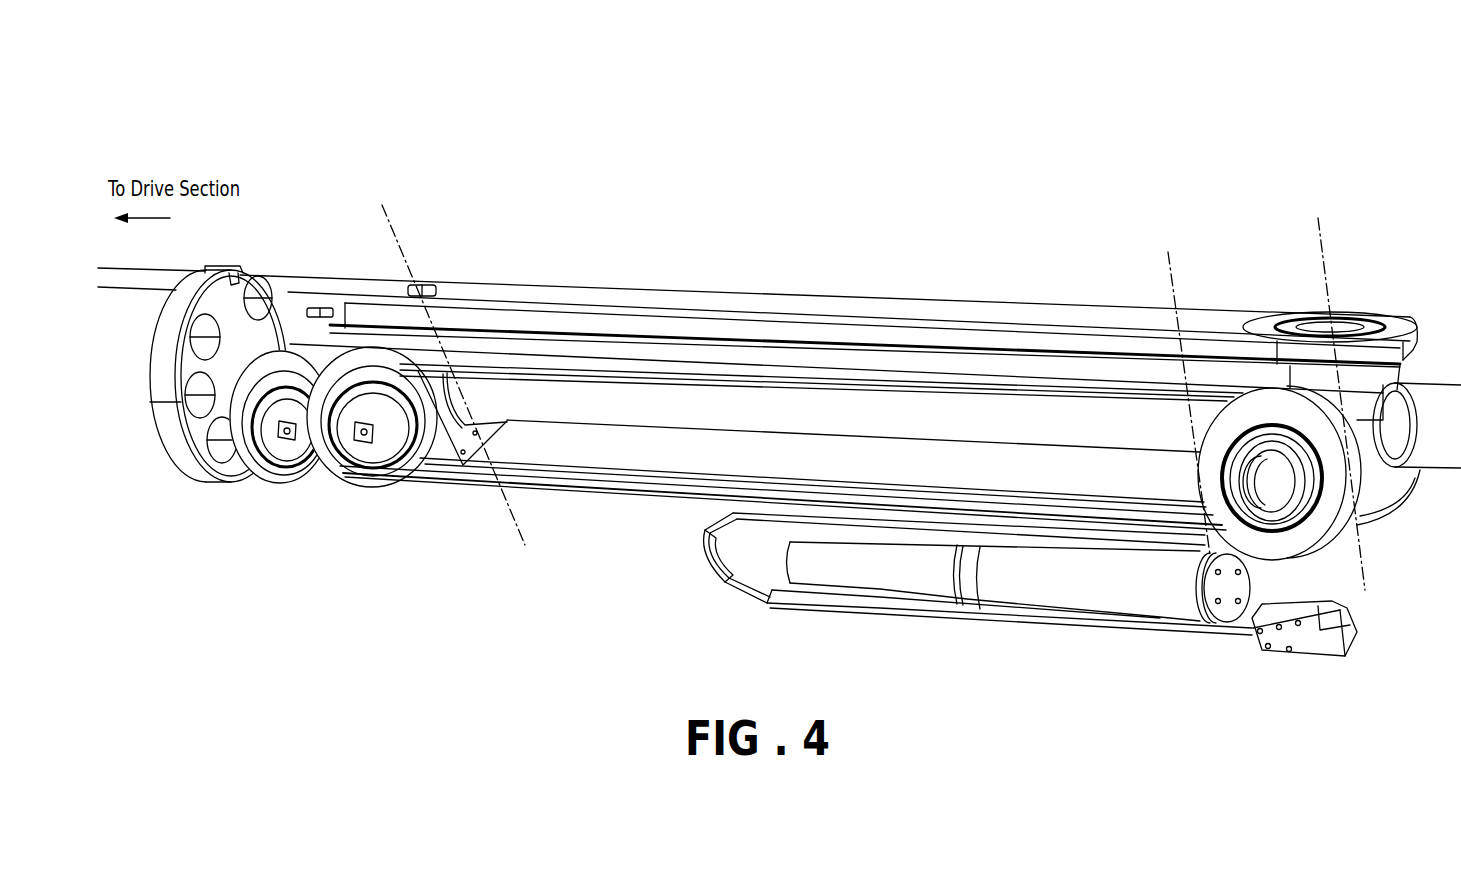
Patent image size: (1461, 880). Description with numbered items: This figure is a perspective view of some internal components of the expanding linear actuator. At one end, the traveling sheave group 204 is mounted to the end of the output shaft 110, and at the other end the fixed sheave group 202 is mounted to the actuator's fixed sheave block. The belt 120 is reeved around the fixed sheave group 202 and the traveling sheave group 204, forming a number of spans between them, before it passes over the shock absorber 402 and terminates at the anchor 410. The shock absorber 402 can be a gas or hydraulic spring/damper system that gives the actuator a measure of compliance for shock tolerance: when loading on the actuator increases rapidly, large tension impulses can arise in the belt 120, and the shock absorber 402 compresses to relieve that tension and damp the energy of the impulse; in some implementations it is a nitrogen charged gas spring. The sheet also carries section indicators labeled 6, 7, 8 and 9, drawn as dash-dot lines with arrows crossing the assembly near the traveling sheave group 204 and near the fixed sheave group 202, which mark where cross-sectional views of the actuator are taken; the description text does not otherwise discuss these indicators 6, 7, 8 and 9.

The output shaft 110 is at (625, 400).
The belt 120 is at (800, 296).
The fixed sheave group 202 is at (1295, 168).
The traveling sheave group 204 is at (343, 517).
The shock absorber 402 is at (1078, 580).
The anchor 410 is at (1309, 658).
The section line 6 is at (415, 227).
The section line 7 is at (1164, 400).
The section line 8 is at (1191, 274).
The section line 9 is at (1346, 247).